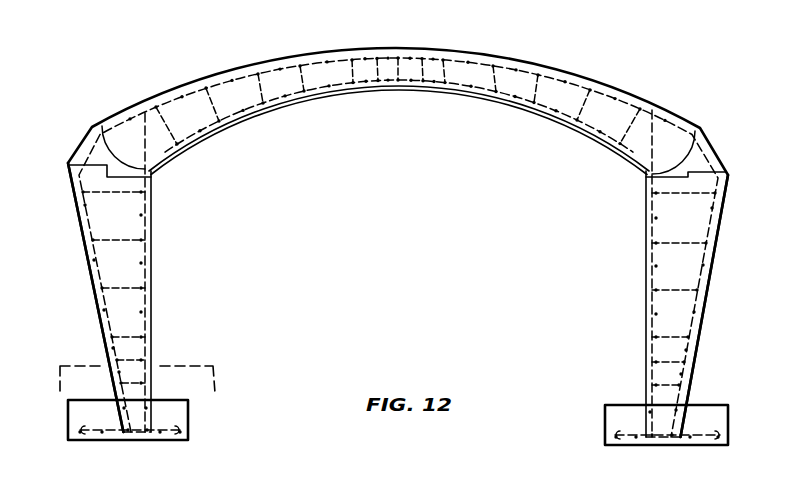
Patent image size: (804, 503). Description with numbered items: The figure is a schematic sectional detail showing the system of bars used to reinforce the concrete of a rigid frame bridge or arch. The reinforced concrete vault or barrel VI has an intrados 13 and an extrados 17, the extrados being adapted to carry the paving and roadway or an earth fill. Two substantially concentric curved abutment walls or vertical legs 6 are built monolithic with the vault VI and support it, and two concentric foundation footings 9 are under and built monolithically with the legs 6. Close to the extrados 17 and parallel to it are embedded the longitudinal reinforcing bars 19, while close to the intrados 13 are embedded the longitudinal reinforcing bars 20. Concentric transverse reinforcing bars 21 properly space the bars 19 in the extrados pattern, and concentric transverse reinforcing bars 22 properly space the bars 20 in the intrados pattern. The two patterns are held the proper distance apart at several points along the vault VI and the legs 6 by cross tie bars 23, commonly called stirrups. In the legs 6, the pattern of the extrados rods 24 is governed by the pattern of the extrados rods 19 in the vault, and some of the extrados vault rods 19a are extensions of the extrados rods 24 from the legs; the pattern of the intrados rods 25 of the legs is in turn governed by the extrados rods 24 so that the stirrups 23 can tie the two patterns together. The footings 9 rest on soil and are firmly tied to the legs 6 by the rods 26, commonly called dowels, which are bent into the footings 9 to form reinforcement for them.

The vertical legs 6 is at (124, 275).
The foundation footings 9 is at (106, 422).
The intrados 13 is at (299, 96).
The extrados 17 is at (621, 96).
The longitudinal reinforcing bars 19 is at (393, 52).
The extrados vault rods 19a is at (157, 96).
The longitudinal reinforcing bars 20 is at (198, 138).
The transverse reinforcing bars 21 is at (225, 86).
The transverse reinforcing bars 22 is at (268, 80).
The cross tie bars 23 is at (176, 131).
The extrados rods 24 is at (89, 262).
The intrados rods 25 is at (147, 249).
The dowels 26 is at (122, 408).
The vault VI is at (197, 127).